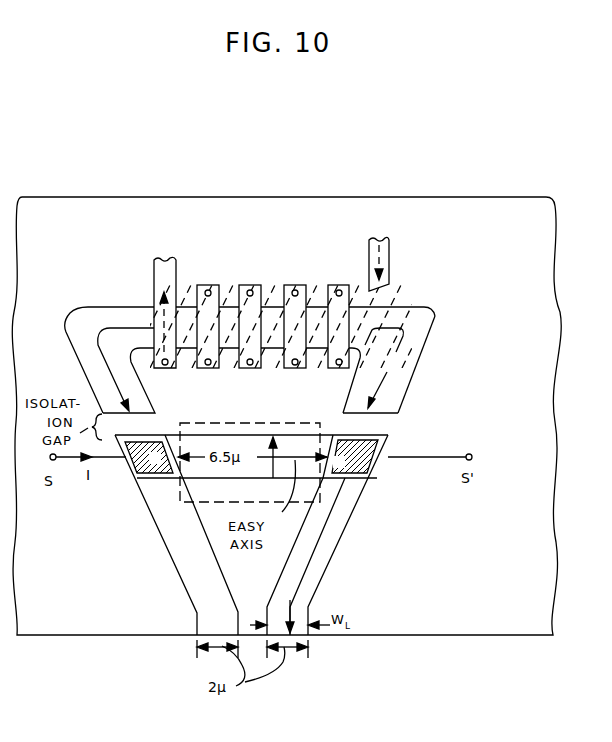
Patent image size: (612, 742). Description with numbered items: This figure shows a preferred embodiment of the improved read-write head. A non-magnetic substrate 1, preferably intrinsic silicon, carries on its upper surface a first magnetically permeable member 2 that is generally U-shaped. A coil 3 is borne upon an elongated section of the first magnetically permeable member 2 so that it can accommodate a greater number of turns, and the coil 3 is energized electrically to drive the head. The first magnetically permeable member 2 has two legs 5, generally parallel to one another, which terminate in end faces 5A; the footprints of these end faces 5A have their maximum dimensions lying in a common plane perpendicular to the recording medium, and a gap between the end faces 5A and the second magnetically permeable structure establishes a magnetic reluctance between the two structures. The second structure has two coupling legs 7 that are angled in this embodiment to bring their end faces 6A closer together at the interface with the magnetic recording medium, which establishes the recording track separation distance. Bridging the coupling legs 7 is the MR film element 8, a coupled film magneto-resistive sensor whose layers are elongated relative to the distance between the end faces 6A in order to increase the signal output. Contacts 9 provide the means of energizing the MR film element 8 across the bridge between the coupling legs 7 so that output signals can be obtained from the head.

The substrate 1 is at (549, 200).
The first magnetically permeable member 2 is at (425, 311).
The coil 3 is at (385, 269).
The legs 5 is at (410, 385).
The end faces 5A is at (392, 417).
The end faces 6A is at (298, 638).
The coupling legs 7 is at (326, 558).
The MR film element 8 is at (282, 430).
The contacts 9 is at (357, 443).